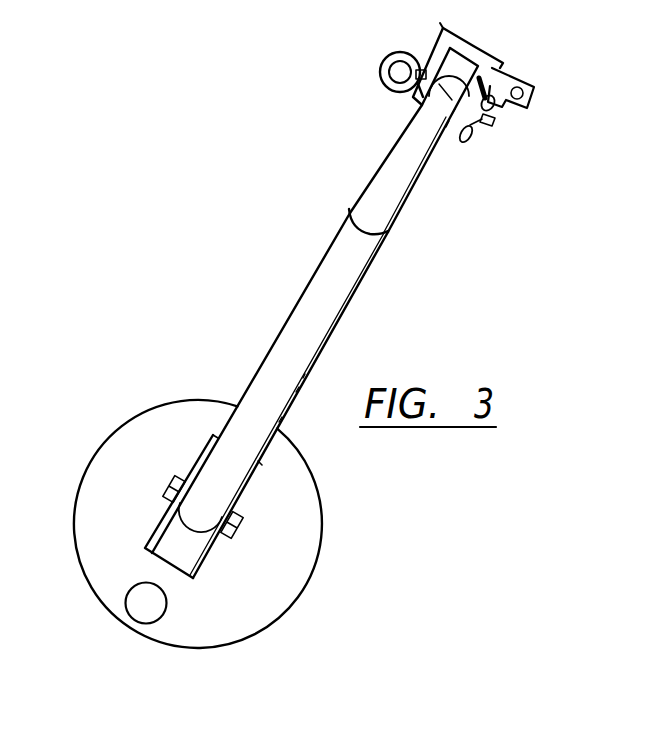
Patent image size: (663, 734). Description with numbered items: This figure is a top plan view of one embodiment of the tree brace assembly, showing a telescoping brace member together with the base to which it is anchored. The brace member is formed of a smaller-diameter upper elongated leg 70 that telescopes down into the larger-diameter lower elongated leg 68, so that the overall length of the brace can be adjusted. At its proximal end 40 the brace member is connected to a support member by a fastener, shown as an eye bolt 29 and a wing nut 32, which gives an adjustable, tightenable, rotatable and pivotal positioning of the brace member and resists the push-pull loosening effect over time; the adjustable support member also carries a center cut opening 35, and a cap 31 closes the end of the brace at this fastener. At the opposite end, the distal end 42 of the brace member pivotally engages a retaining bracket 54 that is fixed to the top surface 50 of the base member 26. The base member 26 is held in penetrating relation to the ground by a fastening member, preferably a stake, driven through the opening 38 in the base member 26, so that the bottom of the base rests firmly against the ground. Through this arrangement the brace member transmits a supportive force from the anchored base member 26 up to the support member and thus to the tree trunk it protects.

The base member 26 is at (352, 523).
The eye bolt 29 is at (387, 57).
The end cap 31 is at (477, 57).
The wing nut 32 is at (482, 116).
The center cut opening 35 is at (538, 92).
The opening 38 is at (143, 606).
The proximal end 40 is at (447, 93).
The distal end of brace member 42 is at (202, 508).
The top surface 50 is at (248, 614).
The retaining bracket 54 is at (213, 552).
The lower elongated leg 68 is at (355, 254).
The upper elongated leg 70 is at (390, 200).